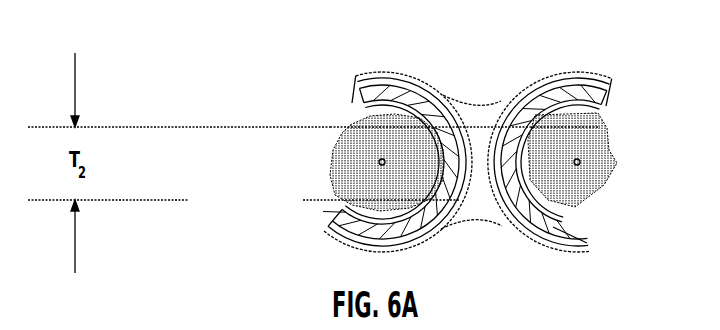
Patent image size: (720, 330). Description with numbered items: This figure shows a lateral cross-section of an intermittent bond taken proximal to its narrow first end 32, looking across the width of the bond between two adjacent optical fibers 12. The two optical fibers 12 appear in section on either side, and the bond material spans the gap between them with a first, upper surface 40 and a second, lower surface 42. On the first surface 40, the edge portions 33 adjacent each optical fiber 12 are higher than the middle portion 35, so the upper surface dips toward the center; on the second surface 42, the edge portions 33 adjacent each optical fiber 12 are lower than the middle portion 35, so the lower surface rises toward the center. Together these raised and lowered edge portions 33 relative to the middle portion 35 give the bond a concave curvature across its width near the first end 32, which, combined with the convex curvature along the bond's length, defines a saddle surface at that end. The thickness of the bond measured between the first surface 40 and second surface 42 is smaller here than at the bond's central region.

The optical fiber 12 is at (397, 88).
The edge portions 33 is at (449, 108).
The middle portion 35 is at (476, 115).
The first end 32 is at (484, 231).
The first surface 40 is at (596, 127).
The second surface 42 is at (460, 200).